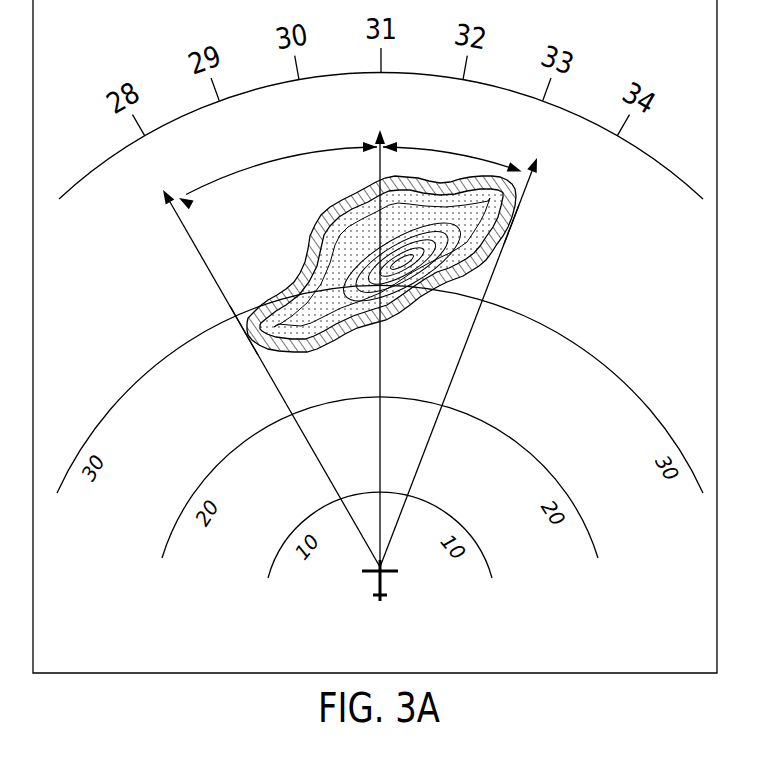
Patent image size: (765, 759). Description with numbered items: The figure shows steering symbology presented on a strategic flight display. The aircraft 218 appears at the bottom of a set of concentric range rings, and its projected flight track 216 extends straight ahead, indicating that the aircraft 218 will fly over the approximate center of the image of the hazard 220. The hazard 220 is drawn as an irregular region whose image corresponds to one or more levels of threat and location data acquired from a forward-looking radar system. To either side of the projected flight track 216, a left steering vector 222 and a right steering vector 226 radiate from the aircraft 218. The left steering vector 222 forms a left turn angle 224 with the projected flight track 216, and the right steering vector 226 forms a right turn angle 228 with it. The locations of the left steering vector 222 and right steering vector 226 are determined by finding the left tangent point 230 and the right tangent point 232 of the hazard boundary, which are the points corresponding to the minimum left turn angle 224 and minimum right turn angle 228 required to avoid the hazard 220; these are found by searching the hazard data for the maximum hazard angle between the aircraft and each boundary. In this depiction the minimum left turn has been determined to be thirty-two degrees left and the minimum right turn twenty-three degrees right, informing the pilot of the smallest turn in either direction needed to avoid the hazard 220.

The projected flight track 216 is at (363, 126).
The aircraft 218 is at (378, 600).
The hazard 220 is at (427, 322).
The left steering vector 222 is at (193, 270).
The left turn angle 224 is at (262, 152).
The right steering vector 226 is at (510, 270).
The right turn angle 228 is at (480, 152).
The left tangent point 230 is at (233, 345).
The right tangent point 232 is at (525, 228).